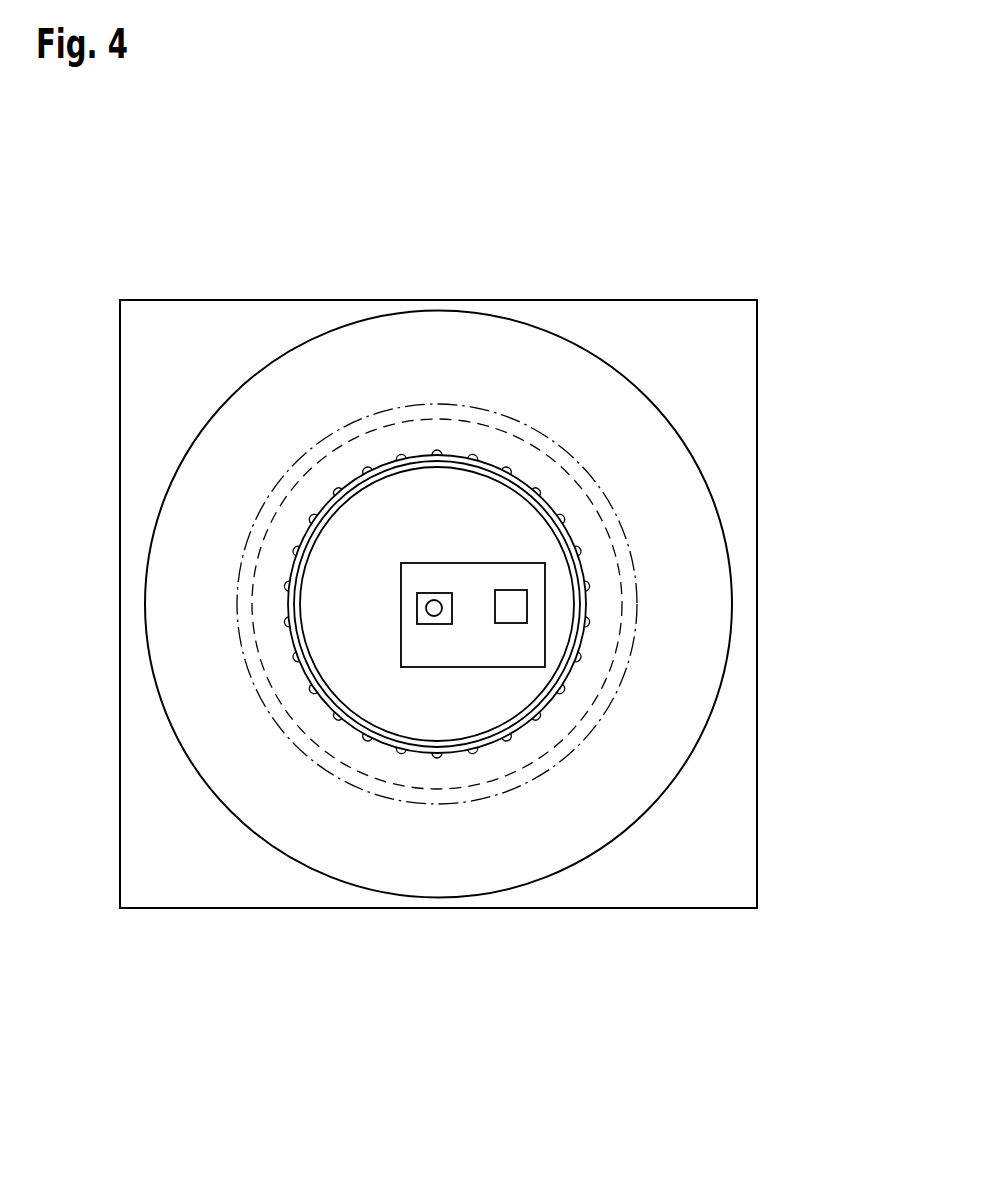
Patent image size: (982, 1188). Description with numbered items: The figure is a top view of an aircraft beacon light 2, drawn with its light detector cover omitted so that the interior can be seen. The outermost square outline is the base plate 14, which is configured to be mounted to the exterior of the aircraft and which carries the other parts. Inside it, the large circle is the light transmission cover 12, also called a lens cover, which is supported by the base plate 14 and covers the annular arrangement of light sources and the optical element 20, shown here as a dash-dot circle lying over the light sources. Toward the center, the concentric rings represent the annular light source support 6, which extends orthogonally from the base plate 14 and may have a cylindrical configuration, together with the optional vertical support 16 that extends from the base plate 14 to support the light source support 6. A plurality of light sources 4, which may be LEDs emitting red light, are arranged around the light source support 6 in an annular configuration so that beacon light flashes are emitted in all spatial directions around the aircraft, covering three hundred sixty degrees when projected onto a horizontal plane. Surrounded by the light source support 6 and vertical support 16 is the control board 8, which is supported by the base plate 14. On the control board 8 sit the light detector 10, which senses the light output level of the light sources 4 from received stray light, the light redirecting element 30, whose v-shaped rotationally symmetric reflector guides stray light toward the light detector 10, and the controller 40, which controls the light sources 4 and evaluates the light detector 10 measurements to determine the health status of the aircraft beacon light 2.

The aircraft beacon light 2 is at (438, 569).
The light sources 4 is at (590, 585).
The light source support 6 is at (387, 742).
The control board 8 is at (528, 667).
The light detector 10 is at (409, 628).
The light transmission cover 12 is at (548, 326).
The base plate 14 is at (657, 908).
The vertical support 16 is at (423, 740).
The optical element 20 is at (601, 488).
The light redirecting element 30 is at (434, 600).
The controller 40 is at (527, 607).